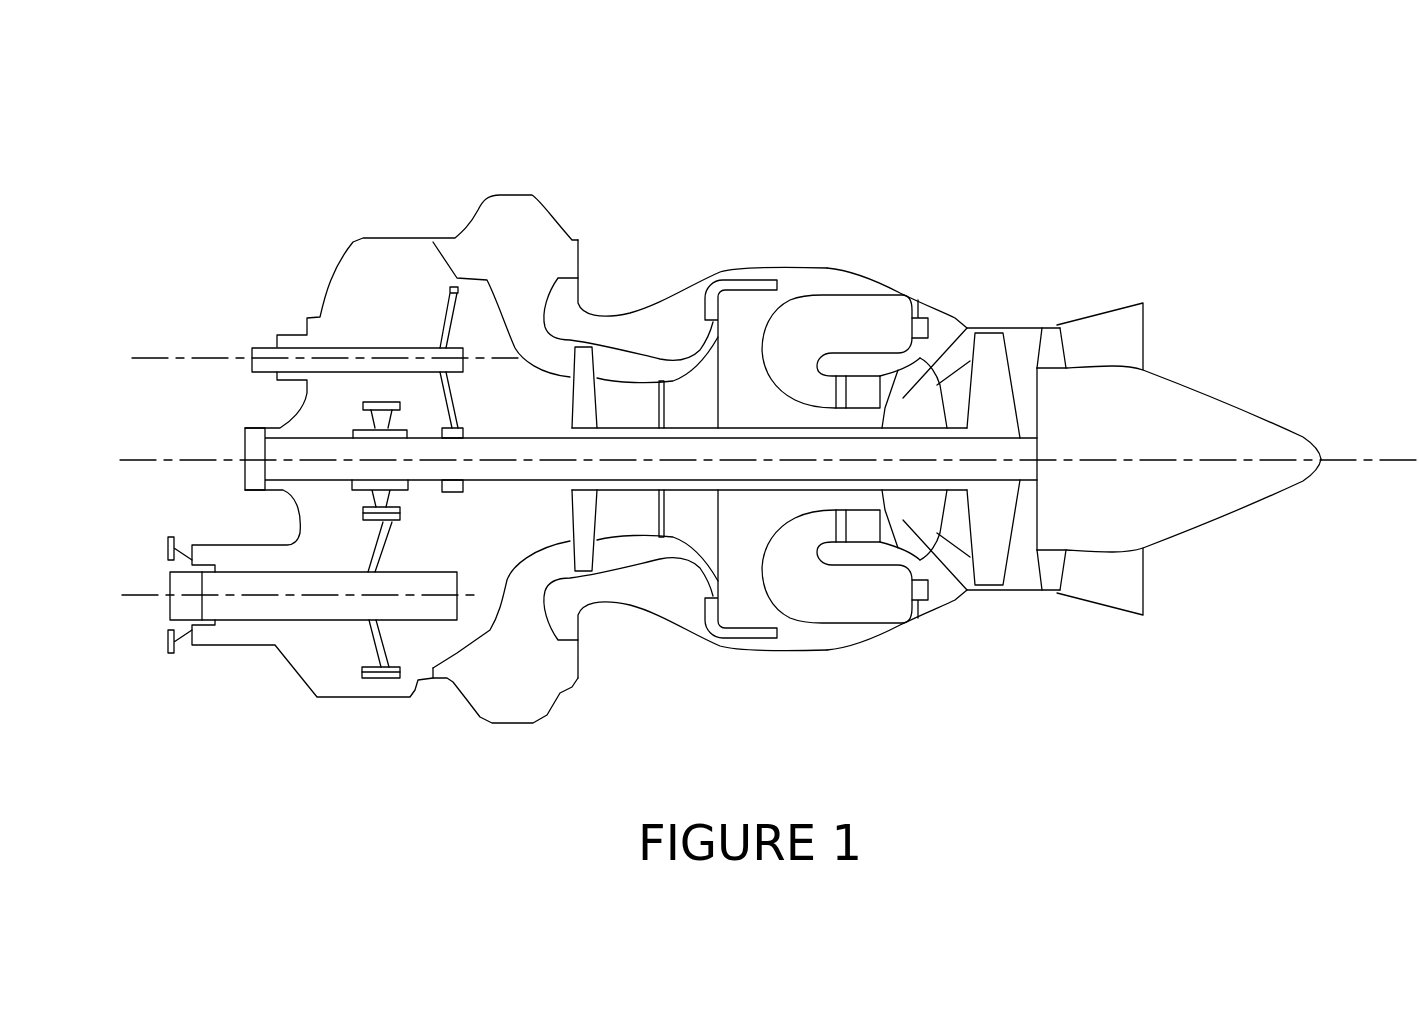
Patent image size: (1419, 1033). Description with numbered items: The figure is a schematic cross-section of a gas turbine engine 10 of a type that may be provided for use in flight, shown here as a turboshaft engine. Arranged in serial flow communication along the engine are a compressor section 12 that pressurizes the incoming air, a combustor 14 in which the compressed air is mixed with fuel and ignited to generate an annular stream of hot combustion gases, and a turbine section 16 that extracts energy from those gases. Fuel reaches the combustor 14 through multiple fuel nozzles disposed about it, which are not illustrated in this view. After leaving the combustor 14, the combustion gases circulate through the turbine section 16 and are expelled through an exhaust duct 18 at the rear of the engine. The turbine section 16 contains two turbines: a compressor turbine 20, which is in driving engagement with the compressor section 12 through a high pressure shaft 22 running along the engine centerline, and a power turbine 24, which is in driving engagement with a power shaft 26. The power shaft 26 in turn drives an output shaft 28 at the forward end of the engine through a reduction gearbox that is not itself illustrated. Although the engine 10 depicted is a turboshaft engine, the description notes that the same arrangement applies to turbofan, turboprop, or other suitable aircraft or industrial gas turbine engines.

The gas turbine engine 10 is at (1115, 209).
The compressor section 12 is at (687, 390).
The combustor 14 is at (840, 330).
The turbine section 16 is at (948, 533).
The exhaust duct 18 is at (1027, 347).
The compressor turbine 20 is at (905, 520).
The high pressure shaft 22 is at (762, 425).
The power turbine 24 is at (992, 358).
The power shaft 26 is at (510, 480).
The output shaft 28 is at (233, 607).